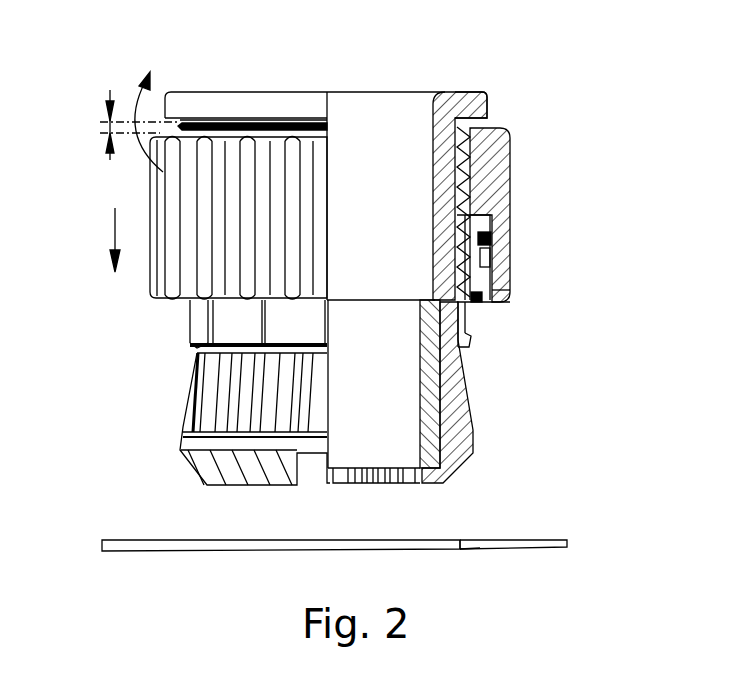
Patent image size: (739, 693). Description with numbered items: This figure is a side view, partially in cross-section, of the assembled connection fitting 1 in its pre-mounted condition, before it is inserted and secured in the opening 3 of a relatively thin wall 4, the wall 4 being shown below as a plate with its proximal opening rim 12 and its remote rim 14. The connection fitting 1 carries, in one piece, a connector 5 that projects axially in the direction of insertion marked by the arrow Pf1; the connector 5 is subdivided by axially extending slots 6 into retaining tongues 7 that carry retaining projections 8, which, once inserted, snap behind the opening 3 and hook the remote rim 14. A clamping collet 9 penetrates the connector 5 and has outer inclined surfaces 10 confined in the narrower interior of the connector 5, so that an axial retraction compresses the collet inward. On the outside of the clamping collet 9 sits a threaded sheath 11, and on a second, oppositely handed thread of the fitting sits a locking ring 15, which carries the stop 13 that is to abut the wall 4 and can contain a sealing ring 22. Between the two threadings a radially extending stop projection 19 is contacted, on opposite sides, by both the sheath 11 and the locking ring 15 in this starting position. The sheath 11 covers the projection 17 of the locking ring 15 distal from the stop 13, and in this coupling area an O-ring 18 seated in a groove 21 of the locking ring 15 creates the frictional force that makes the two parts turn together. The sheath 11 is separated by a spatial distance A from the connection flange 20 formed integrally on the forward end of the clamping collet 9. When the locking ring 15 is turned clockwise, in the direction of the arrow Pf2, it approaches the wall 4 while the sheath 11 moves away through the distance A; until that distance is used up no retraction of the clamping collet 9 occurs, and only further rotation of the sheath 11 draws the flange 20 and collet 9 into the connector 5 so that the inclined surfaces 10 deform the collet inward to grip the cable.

The connection fitting 1 is at (568, 77).
The opening 3 is at (387, 541).
The wall 4 is at (552, 540).
The connector 5 is at (178, 311).
The slot 6 is at (190, 365).
The retaining tongue 7 is at (303, 338).
The retaining projection 8 is at (471, 347).
The clamping collet 9 is at (437, 183).
The inclined surface 10 is at (473, 405).
The sheath 11 is at (512, 165).
The opening rim 12 is at (477, 540).
The stop 13 is at (469, 333).
The rim 14 is at (470, 551).
The locking ring 15 is at (508, 291).
The projection 17 is at (484, 236).
The O-ring 18 is at (463, 240).
The stop projection 19 is at (468, 214).
The connection flange 20 is at (473, 93).
The groove 21 is at (487, 258).
The sealing ring 22 is at (473, 305).
The spatial separation A is at (107, 130).
The direction of insertion arrow Pf1 is at (111, 229).
The rotation direction arrow Pf2 is at (150, 157).